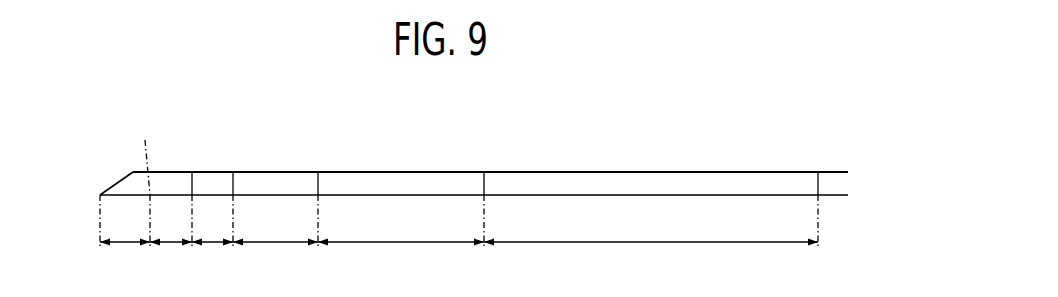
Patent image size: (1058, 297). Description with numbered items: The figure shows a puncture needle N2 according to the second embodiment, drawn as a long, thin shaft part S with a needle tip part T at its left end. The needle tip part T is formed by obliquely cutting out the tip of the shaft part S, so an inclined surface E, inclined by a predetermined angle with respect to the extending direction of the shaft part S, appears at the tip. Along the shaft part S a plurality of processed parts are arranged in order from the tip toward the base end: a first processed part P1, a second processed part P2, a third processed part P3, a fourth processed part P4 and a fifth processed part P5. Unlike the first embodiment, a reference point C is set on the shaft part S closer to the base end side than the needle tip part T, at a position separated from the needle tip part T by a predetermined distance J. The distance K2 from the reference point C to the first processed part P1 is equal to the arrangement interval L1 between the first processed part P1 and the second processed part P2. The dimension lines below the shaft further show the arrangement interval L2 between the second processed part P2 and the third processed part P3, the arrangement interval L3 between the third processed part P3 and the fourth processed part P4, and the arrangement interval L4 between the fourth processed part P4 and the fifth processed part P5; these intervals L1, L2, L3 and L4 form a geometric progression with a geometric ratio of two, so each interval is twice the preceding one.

The needle tip part T is at (100, 195).
The inclined surface E is at (117, 182).
The reference point C is at (143, 178).
The first processed part P1 is at (192, 171).
The second processed part P2 is at (233, 171).
The third processed part P3 is at (318, 171).
The fourth processed part P4 is at (484, 171).
The fifth processed part P5 is at (818, 172).
The puncture needle N2 is at (601, 185).
The shaft part S is at (708, 185).
The predetermined distance J is at (125, 264).
The distance from reference point to first processed part K2 is at (171, 264).
The arrangement interval L1 is at (212, 264).
The arrangement interval L2 is at (275, 264).
The arrangement interval L3 is at (401, 264).
The arrangement interval L4 is at (651, 264).